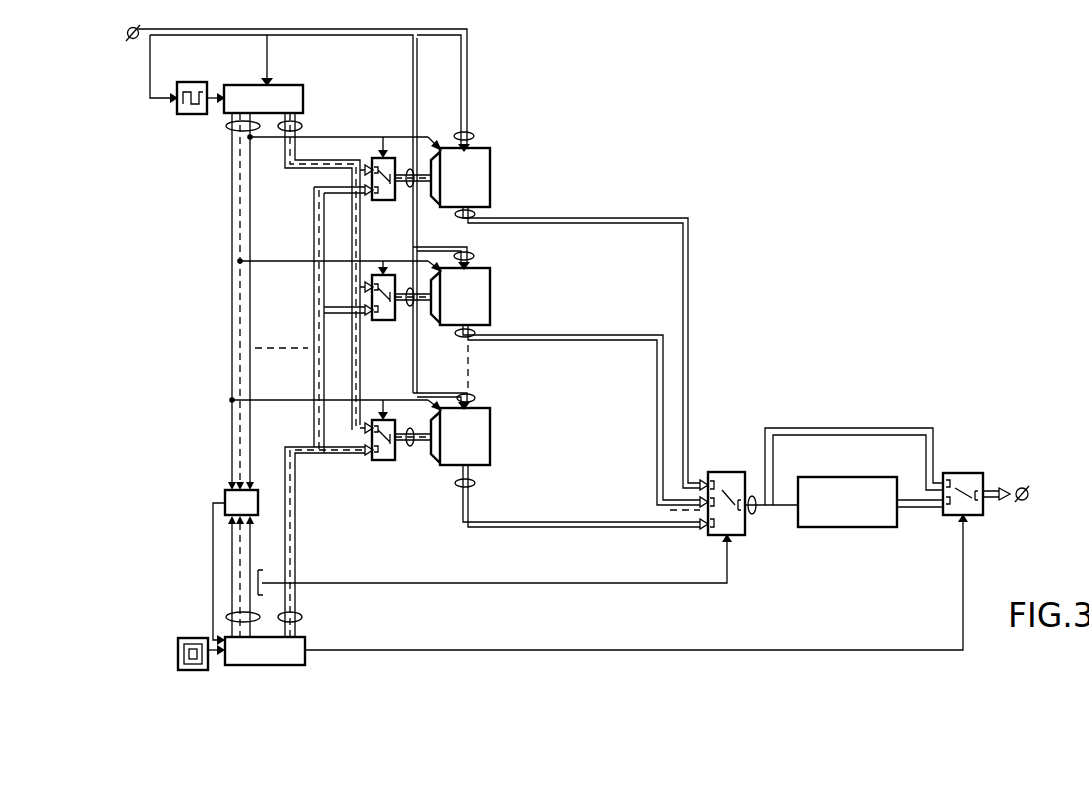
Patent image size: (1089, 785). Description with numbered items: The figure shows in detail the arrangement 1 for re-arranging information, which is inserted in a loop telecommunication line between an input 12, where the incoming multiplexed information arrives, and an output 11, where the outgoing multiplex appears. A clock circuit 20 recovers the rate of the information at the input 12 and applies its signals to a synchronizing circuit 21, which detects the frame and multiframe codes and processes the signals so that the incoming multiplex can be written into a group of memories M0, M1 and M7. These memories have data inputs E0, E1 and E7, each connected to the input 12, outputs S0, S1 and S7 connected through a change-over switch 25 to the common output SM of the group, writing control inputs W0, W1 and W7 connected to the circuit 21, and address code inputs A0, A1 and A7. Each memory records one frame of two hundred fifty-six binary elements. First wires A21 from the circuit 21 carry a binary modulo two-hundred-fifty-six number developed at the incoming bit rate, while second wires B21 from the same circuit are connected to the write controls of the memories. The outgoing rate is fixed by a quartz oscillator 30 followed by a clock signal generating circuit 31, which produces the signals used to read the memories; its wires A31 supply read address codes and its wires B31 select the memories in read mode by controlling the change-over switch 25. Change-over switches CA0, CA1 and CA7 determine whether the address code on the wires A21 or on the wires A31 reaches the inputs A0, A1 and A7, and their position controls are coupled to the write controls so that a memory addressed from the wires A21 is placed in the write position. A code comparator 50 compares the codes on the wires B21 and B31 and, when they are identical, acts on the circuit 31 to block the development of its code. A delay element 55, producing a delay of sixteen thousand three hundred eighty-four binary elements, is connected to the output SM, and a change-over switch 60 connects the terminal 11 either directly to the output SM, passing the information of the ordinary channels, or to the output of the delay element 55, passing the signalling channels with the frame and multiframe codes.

The arrangement for re-arranging information 1 is at (803, 252).
The output 11 is at (1028, 500).
The input 12 is at (131, 40).
The clock circuit 20 is at (192, 115).
The synchronizing circuit 21 is at (290, 88).
The first wires A21 is at (297, 124).
The second wires B21 is at (228, 121).
The change-over switch CA0 is at (387, 160).
The input for address codes A0 is at (403, 189).
The writing control input W0 is at (436, 140).
The input E0 is at (471, 137).
The memory M0 is at (460, 177).
The output S0 is at (478, 215).
The change-over switch CA1 is at (386, 323).
The input for address codes A1 is at (402, 305).
The writing control input W1 is at (436, 262).
The input E1 is at (471, 256).
The memory M1 is at (460, 296).
The output S1 is at (478, 335).
The change-over switch CA7 is at (386, 462).
The input for address codes A7 is at (413, 447).
The writing control input W7 is at (437, 400).
The input E7 is at (474, 399).
The memory M7 is at (460, 436).
The output S7 is at (478, 485).
The code comparator 50 is at (224, 497).
The quartz oscillator 30 is at (190, 672).
The clock signal generating circuit 31 is at (280, 666).
The wires A31 is at (298, 621).
The second wires B31 is at (230, 616).
The change-over switch 25 is at (730, 470).
The output of the group of memories SM is at (753, 514).
The delay element 55 is at (864, 516).
The change-over switch 60 is at (966, 470).